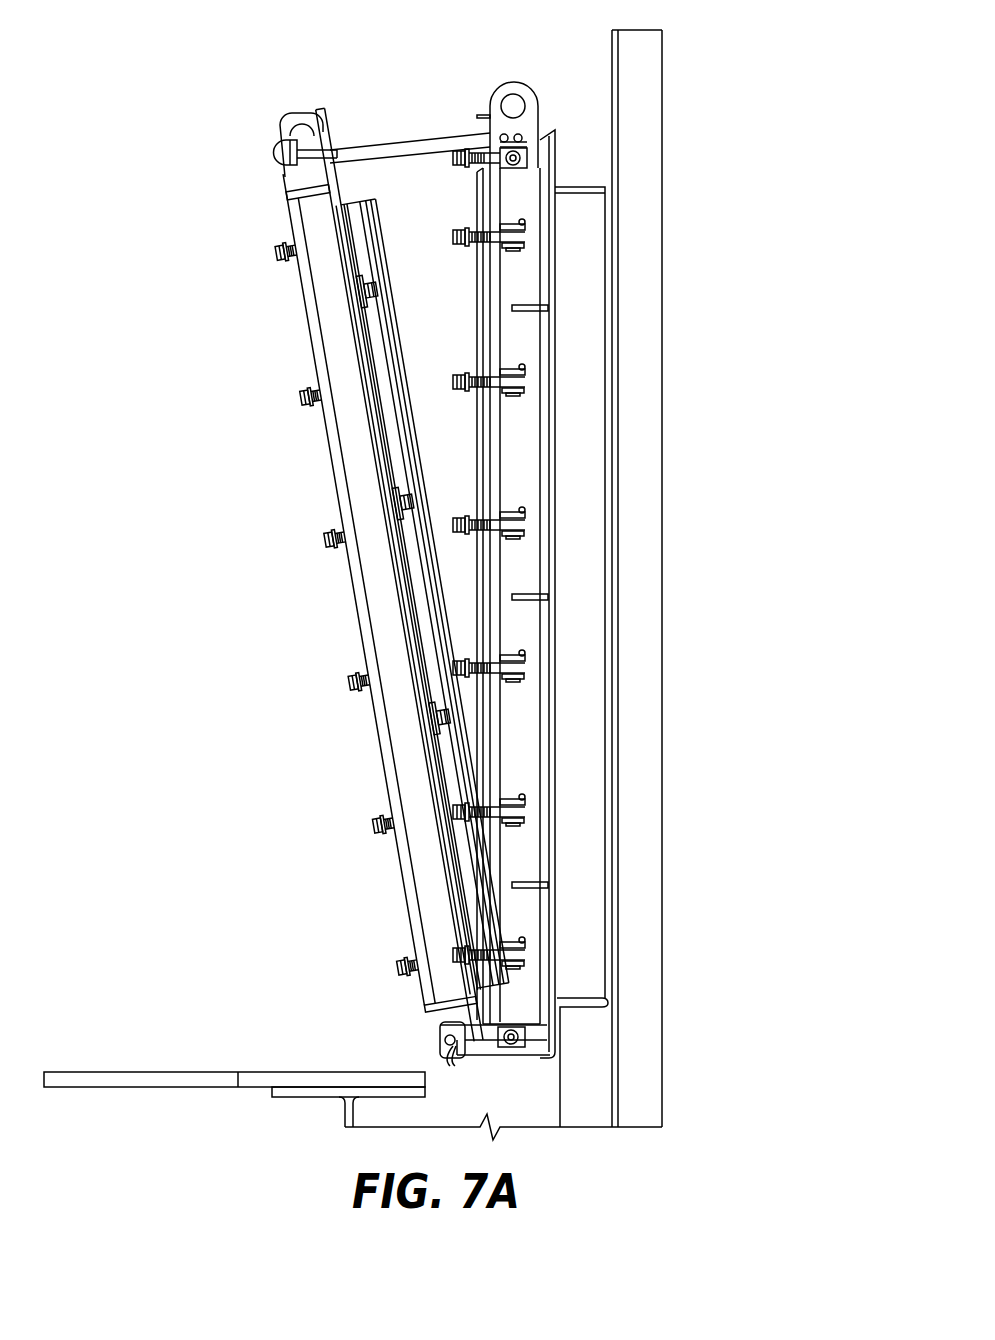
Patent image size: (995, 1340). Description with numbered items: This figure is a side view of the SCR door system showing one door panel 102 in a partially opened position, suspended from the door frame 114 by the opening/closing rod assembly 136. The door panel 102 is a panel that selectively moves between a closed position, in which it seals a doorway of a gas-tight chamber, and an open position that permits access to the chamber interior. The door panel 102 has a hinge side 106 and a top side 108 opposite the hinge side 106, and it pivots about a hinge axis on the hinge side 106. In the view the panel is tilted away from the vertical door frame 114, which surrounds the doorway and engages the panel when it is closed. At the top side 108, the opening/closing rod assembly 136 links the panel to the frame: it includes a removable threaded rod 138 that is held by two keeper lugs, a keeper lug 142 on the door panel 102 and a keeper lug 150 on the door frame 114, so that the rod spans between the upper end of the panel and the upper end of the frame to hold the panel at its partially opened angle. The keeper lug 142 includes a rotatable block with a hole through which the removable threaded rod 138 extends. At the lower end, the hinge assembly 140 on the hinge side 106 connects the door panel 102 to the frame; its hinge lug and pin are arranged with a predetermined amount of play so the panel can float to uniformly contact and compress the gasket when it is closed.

The door panel 102 is at (543, 571).
The hinge side 106 is at (605, 1017).
The top side 108 is at (312, 108).
The door frame 114 is at (532, 182).
The opening/closing rod assembly 136 is at (306, 168).
The removable threaded rod 138 is at (410, 137).
The hinge assembly 140 is at (430, 1035).
The keeper lug 142 is at (571, 545).
The keeper lug 150 is at (498, 125).